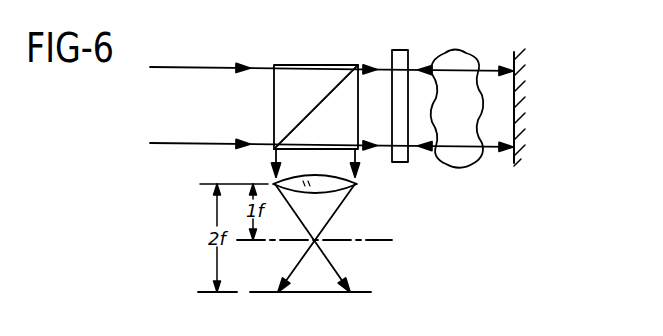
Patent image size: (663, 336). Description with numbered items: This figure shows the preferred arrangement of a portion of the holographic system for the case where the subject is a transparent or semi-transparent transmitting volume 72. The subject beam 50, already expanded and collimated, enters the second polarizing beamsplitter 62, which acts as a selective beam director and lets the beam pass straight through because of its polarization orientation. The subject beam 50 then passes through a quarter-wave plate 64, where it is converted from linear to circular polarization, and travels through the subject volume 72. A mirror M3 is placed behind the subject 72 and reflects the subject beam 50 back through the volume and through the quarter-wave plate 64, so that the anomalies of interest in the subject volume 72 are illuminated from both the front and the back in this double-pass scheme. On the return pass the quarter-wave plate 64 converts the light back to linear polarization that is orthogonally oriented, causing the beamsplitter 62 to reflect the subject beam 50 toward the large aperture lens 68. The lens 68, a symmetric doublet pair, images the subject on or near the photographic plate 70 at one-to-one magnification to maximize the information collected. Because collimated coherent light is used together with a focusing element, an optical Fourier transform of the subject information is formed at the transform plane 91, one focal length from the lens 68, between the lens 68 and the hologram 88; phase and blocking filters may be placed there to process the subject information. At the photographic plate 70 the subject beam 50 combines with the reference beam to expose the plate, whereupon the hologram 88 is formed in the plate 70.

The subject beam 50 is at (186, 114).
The second polarizing beamsplitter 62 is at (289, 65).
The quarter-wave plate 64 is at (397, 50).
The transmitting volume 72 is at (467, 51).
The mirror M3 is at (518, 87).
The large aperture lens 68 is at (333, 188).
The transform plane 91 is at (358, 242).
The photographic plate 70 is at (367, 293).
The hologram 88 is at (372, 294).